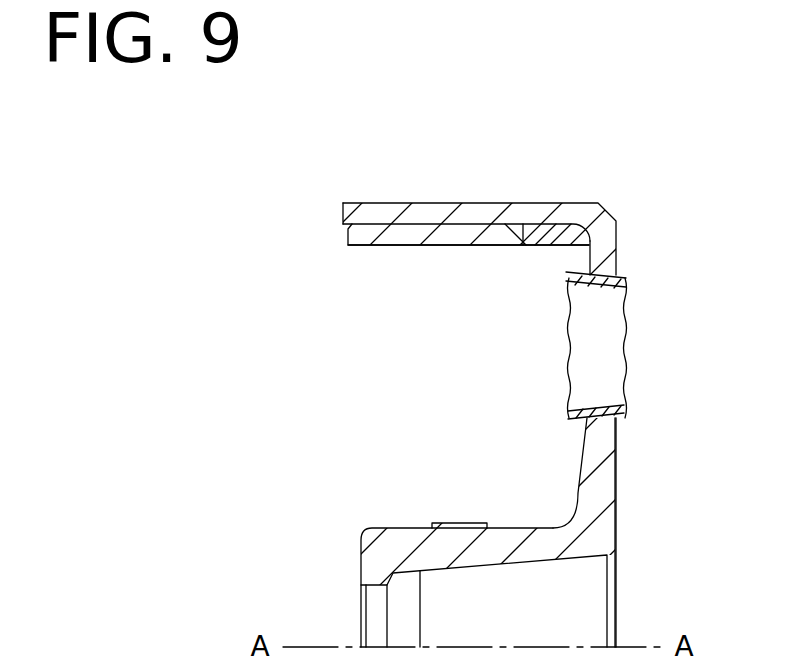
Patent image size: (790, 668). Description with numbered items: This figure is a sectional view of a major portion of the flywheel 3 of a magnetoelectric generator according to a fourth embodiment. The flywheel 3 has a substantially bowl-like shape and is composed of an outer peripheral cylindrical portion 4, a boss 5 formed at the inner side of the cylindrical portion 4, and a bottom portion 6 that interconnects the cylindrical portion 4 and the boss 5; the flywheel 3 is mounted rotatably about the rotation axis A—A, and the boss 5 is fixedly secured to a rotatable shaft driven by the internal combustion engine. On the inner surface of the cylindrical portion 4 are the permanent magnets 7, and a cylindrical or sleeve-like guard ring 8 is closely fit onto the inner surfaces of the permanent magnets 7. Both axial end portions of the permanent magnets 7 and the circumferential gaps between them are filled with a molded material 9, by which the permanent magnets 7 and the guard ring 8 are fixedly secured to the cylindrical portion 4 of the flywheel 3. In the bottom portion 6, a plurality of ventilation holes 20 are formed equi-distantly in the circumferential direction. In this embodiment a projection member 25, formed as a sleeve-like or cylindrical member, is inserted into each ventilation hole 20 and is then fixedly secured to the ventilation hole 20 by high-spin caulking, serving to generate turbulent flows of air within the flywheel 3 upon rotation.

The flywheel 3 is at (642, 232).
The cylindrical portion 4 is at (473, 204).
The boss 5 is at (517, 537).
The bottom portion 6 is at (616, 477).
The permanent magnets 7 is at (443, 237).
The guard ring 8 is at (394, 248).
The molded material 9 is at (553, 235).
The ventilation holes 20 is at (610, 405).
The projection member 25 is at (616, 285).